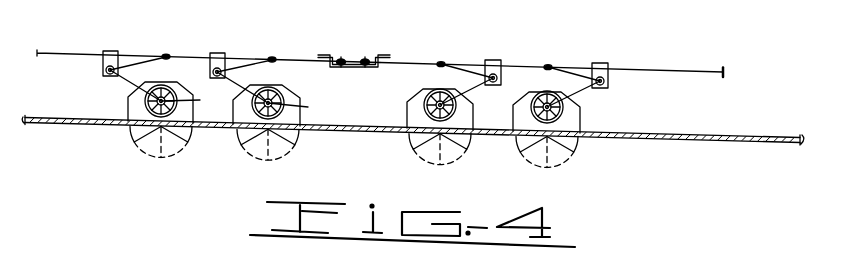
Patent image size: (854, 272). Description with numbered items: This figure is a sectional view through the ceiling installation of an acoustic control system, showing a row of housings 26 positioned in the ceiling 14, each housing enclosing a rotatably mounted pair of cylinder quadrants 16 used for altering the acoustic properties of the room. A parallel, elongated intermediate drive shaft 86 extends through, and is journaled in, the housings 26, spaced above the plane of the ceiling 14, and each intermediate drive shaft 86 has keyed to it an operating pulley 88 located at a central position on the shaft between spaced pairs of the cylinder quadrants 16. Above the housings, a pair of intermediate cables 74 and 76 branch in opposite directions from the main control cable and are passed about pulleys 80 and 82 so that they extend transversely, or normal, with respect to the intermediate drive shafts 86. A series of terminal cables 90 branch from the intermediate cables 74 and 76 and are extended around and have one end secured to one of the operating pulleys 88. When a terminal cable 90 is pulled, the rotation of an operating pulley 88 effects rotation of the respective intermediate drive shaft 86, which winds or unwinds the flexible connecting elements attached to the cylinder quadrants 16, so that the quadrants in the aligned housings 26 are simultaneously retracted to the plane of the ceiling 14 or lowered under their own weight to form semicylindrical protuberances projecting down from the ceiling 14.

The ceiling 14 is at (662, 141).
The cylinder quadrants 16 is at (126, 139).
The housings 26 is at (128, 108).
The intermediate cable 74 is at (300, 58).
The intermediate cable 76 is at (518, 64).
The pulley 80 is at (343, 58).
The pulley 82 is at (367, 57).
The intermediate drive shaft 86 is at (163, 99).
The operating pulley 88 is at (545, 95).
The terminal cables 90 is at (135, 52).